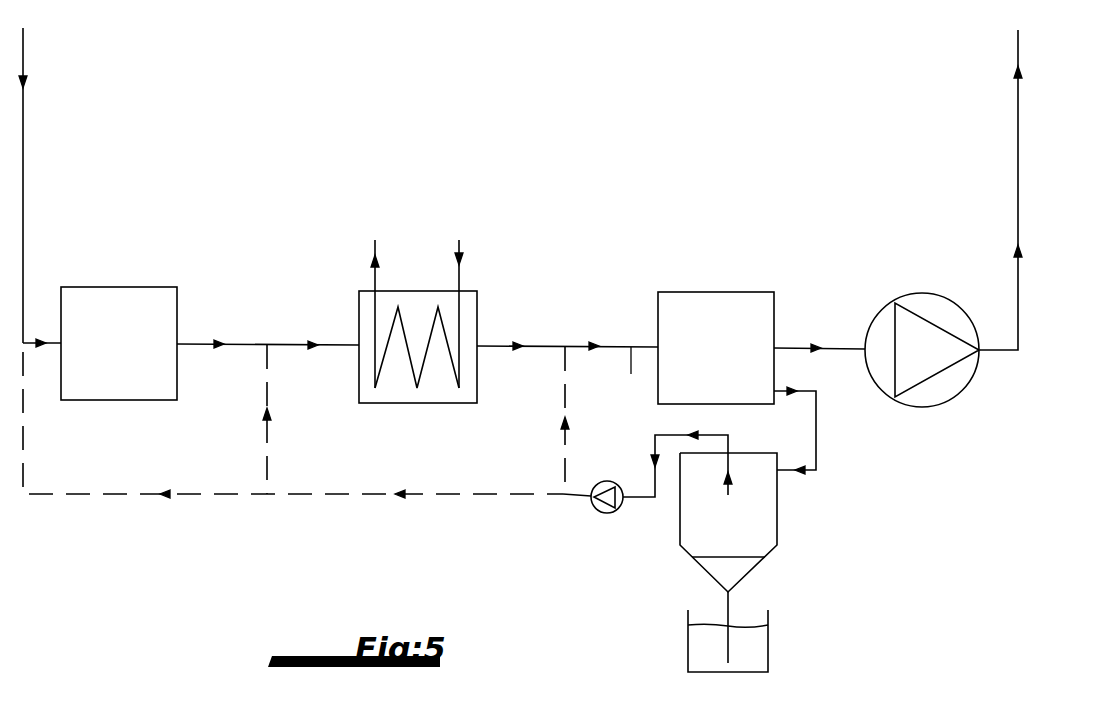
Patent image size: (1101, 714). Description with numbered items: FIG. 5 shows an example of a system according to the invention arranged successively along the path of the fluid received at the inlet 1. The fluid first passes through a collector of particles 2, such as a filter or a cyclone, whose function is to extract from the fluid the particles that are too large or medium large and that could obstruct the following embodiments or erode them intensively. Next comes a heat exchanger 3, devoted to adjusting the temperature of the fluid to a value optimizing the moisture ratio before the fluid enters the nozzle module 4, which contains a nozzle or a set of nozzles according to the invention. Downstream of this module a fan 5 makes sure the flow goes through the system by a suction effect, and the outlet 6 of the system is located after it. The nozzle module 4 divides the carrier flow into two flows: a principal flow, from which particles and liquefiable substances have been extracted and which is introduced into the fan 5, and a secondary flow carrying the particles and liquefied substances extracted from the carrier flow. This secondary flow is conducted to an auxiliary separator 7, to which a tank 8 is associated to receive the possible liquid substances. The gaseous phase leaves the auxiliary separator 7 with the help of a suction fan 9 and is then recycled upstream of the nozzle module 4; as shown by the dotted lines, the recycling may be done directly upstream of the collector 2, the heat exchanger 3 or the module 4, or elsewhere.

The fluid inlet 1 is at (23, 60).
The collector of particles 2 is at (119, 343).
The heat exchanger 3 is at (420, 305).
The nozzle module 4 is at (722, 310).
The fan 5 is at (935, 303).
The outlet 6 is at (1018, 60).
The auxiliary separator 7 is at (768, 514).
The tank 8 is at (706, 672).
The suction fan 9 is at (603, 513).